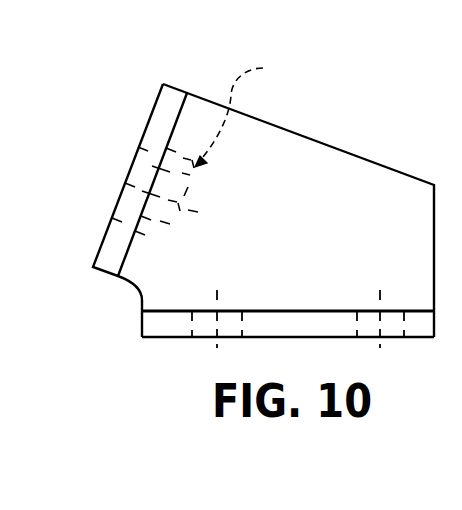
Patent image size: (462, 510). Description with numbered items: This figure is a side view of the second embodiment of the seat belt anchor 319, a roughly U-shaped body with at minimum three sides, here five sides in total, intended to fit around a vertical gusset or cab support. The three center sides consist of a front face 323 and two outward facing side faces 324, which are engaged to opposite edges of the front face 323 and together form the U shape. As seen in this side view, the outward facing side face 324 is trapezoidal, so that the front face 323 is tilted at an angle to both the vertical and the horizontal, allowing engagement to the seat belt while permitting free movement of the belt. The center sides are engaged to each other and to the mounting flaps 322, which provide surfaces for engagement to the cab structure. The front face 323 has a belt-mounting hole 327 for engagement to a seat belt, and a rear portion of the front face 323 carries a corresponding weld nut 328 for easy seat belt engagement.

The seat belt anchor 319 is at (388, 98).
The mounting flap 322 is at (312, 312).
The front face 323 is at (151, 108).
The outward facing side face 324 is at (258, 222).
The belt-mounting hole 327 is at (131, 169).
The weld nut 328 is at (237, 141).